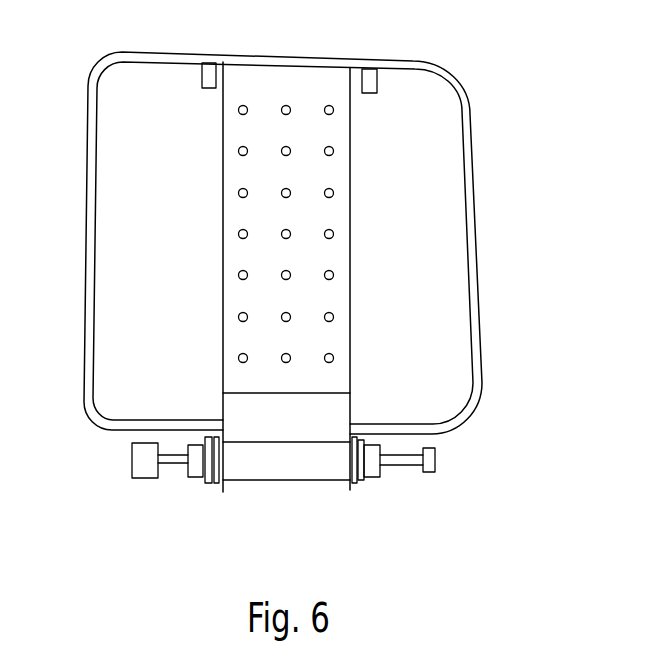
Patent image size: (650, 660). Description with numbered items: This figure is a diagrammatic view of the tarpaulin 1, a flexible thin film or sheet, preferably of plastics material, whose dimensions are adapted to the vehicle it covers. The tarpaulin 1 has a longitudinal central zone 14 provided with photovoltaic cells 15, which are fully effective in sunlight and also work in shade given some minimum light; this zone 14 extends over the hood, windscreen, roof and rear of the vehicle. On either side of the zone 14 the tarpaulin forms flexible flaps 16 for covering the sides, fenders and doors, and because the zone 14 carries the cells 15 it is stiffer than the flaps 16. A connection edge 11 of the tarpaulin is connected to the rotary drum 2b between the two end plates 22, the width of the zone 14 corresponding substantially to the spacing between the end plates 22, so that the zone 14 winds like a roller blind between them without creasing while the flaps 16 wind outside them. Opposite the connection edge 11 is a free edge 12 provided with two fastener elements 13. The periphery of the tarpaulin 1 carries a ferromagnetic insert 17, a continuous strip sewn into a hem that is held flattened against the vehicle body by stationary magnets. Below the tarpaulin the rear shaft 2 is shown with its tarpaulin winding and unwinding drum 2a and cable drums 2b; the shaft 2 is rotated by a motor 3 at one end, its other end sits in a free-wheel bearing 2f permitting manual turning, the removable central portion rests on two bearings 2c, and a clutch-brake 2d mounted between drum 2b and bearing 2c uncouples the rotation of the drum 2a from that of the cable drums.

The tarpaulin 1 is at (75, 168).
The rear shaft 2 is at (403, 463).
The tarpaulin winding and unwinding drum 2a is at (313, 478).
The cable winding and unwinding drum 2b is at (162, 478).
The bearing 2c is at (211, 484).
The clutch-brake 2d is at (190, 476).
The free-wheel bearing 2f is at (436, 460).
The motor 3 is at (136, 472).
The connection edge 11 is at (246, 433).
The free edge 12 is at (289, 66).
The fastener element 13 is at (209, 72).
The longitudinal central zone 14 is at (256, 252).
The photovoltaic cell 15 is at (242, 317).
The flap 16 is at (114, 264).
The ferromagnetic insert 17 is at (95, 212).
The end plate 22 is at (221, 488).